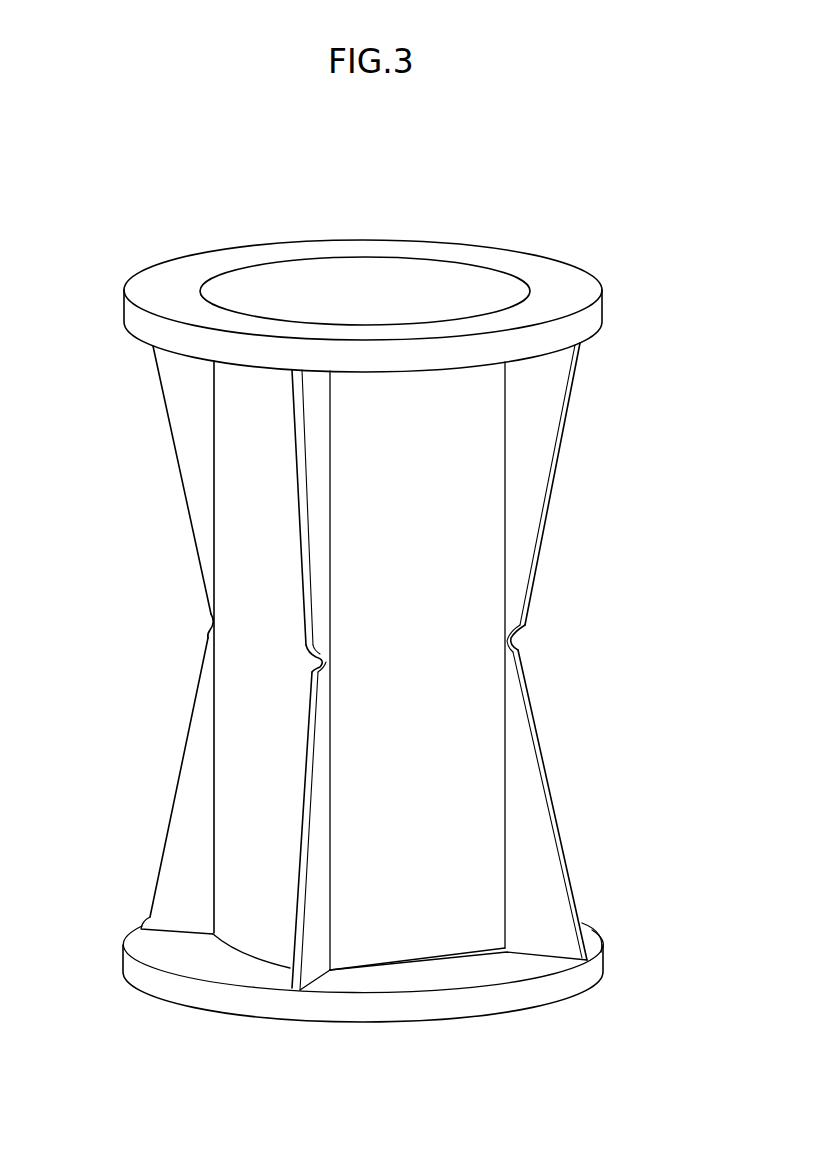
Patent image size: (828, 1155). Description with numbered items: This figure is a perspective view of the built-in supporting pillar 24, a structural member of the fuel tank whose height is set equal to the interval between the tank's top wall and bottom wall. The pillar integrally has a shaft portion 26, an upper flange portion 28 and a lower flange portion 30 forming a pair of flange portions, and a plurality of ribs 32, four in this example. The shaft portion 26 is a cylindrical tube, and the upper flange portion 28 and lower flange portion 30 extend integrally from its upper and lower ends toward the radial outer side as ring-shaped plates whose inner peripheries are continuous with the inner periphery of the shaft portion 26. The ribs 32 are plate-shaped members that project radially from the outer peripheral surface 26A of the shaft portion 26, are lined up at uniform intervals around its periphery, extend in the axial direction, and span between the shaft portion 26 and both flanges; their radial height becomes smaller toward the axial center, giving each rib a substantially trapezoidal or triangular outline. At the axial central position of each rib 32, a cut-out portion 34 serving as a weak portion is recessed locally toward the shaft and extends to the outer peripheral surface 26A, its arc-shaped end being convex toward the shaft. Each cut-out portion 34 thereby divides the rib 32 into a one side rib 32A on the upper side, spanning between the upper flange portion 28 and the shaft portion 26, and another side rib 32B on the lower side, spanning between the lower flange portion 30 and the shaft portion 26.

The built-in supporting pillar 24 is at (404, 206).
The upper flange portion 28 is at (558, 278).
The lower flange portion 30 is at (200, 1012).
The shaft portion 26 is at (411, 675).
The outer peripheral surface 26A is at (472, 560).
The rib 32 is at (183, 733).
The one side rib 32A is at (173, 462).
The other side rib 32B is at (170, 803).
The cut-out portion 34 is at (210, 630).